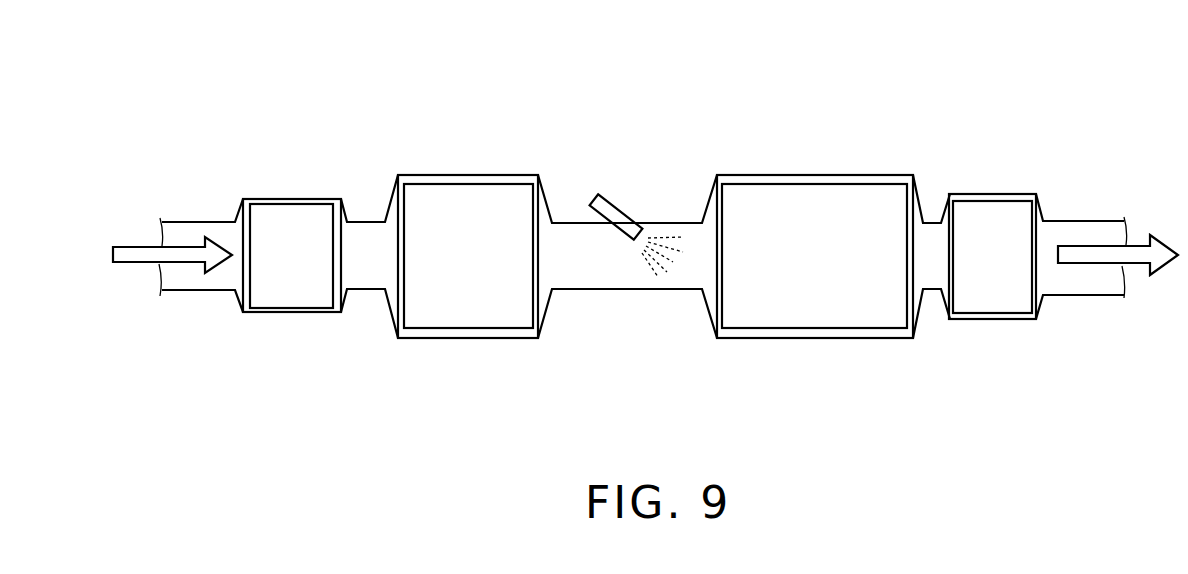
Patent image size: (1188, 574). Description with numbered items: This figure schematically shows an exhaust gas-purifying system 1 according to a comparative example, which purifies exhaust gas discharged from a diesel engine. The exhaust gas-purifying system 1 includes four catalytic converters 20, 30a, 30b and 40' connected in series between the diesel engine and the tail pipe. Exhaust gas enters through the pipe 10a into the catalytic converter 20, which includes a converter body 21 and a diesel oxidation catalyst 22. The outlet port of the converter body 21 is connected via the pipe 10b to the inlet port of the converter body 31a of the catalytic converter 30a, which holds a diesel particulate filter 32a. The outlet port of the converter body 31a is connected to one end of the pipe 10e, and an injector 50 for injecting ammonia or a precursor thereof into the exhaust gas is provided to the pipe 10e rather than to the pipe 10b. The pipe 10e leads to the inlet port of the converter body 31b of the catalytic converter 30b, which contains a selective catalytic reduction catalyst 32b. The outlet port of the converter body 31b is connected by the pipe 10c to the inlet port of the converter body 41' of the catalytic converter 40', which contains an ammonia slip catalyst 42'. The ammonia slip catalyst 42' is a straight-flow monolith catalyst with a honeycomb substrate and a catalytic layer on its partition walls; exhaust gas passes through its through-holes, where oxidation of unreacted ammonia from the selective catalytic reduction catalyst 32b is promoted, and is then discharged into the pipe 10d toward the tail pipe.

The exhaust gas-purifying system 1 is at (645, 218).
The pipe 10a is at (200, 222).
The pipe 10b is at (367, 222).
The pipe 10c is at (935, 223).
The pipe 10d is at (1082, 221).
The pipe 10e is at (677, 223).
The catalytic converter 20 is at (292, 247).
The converter body 21 is at (268, 312).
The diesel oxidation catalyst 22 is at (313, 303).
The catalytic converter 30a is at (468, 247).
The converter body 31a is at (438, 338).
The diesel particulate filter 32a is at (498, 322).
The catalytic converter 30b is at (815, 246).
The converter body 31b is at (787, 338).
The selective catalytic reduction catalyst 32b is at (847, 322).
The catalytic converter 40' is at (993, 247).
The converter body 41' is at (992, 286).
The ammonia slip catalyst 42' is at (995, 284).
The injector 50 is at (597, 196).